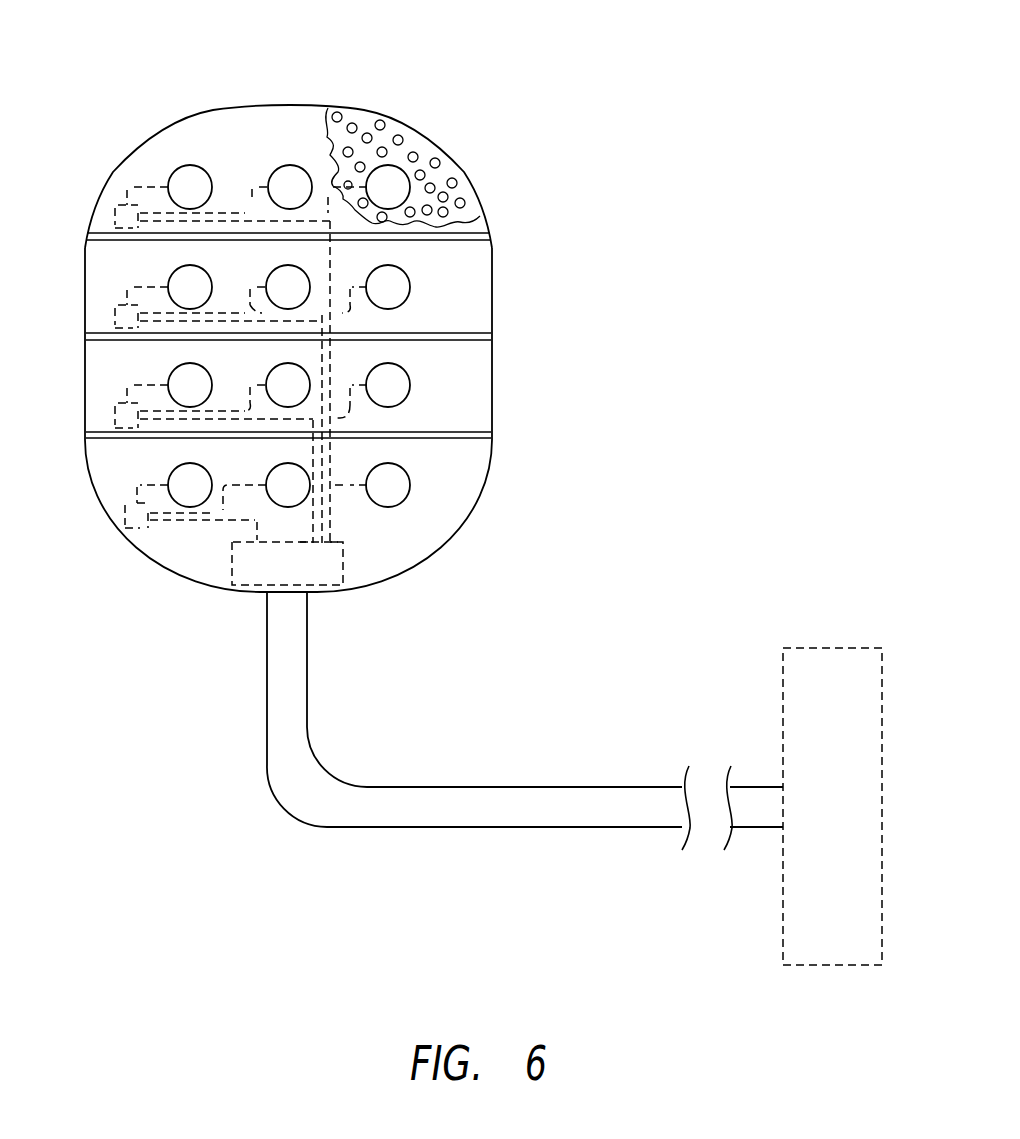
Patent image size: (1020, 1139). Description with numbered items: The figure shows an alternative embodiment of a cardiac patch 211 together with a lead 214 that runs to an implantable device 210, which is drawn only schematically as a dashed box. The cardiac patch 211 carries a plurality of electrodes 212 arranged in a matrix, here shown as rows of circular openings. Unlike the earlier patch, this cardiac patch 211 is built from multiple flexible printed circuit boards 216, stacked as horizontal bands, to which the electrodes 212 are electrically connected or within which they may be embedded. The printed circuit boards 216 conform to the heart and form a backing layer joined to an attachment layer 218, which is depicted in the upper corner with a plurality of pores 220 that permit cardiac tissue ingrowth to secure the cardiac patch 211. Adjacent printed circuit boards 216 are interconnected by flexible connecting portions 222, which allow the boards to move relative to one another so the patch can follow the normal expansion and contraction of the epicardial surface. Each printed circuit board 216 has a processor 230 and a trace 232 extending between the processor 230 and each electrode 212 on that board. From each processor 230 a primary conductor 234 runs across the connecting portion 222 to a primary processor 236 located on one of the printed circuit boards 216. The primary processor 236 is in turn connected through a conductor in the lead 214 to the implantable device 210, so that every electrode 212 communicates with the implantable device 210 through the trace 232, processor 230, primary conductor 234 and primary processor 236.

The implantable device 210 is at (833, 647).
The cardiac patch 211 is at (470, 307).
The electrodes 212 is at (410, 386).
The lead 214 is at (417, 797).
The printed circuit boards 216 is at (447, 492).
The attachment layer 218 is at (425, 152).
The pores 220 is at (385, 122).
The connecting portions 222 is at (297, 125).
The processor 230 is at (124, 220).
The trace 232 is at (243, 212).
The primary conductor 234 is at (337, 252).
The primary processor 236 is at (335, 567).